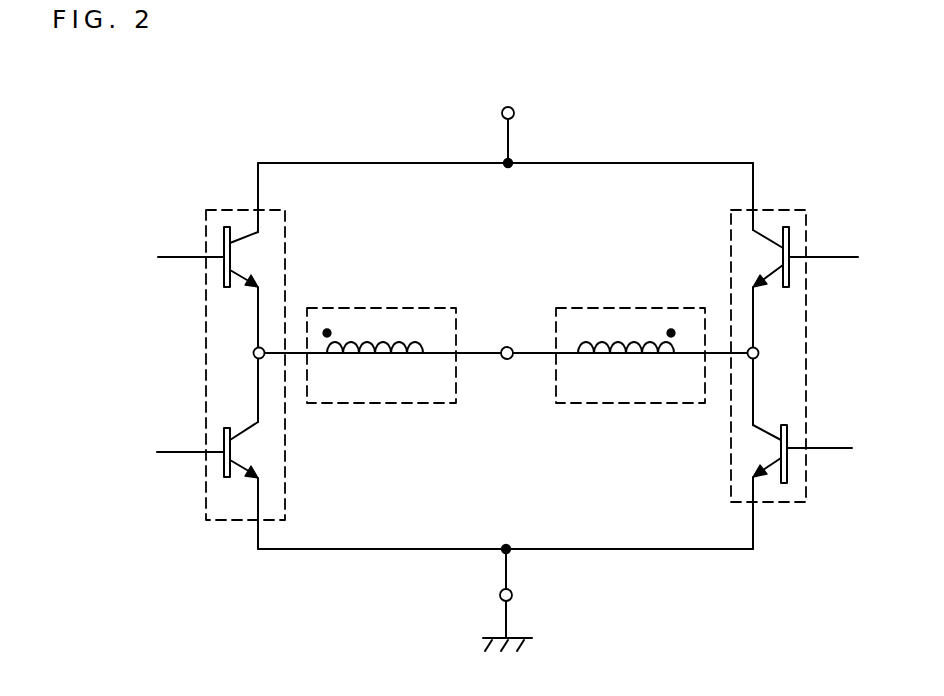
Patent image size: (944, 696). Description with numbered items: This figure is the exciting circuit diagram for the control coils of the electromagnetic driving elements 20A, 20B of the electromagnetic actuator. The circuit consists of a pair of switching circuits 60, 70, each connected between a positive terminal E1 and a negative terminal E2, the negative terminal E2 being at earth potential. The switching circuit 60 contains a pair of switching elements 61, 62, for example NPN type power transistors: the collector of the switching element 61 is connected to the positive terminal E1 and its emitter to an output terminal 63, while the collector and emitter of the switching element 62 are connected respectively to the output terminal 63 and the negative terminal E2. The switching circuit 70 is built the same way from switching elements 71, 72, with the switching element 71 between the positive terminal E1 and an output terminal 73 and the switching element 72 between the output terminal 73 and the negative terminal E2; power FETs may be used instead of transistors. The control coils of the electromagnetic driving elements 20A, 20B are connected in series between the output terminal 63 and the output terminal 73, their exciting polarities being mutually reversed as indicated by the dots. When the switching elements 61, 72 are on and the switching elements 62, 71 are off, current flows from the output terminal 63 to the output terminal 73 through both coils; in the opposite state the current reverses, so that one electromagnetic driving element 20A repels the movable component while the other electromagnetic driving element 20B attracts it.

The electromagnetic driving element 20A is at (630, 327).
The electromagnetic driving element 20B is at (381, 327).
The switching circuit 60 is at (806, 212).
The switching element 61 is at (790, 275).
The switching element 62 is at (788, 465).
The output terminal 63 is at (759, 353).
The switching circuit 70 is at (206, 212).
The switching element 71 is at (222, 243).
The switching element 72 is at (222, 438).
The output terminal 73 is at (253, 353).
The positive terminal E1 is at (515, 113).
The negative terminal E2 is at (513, 595).